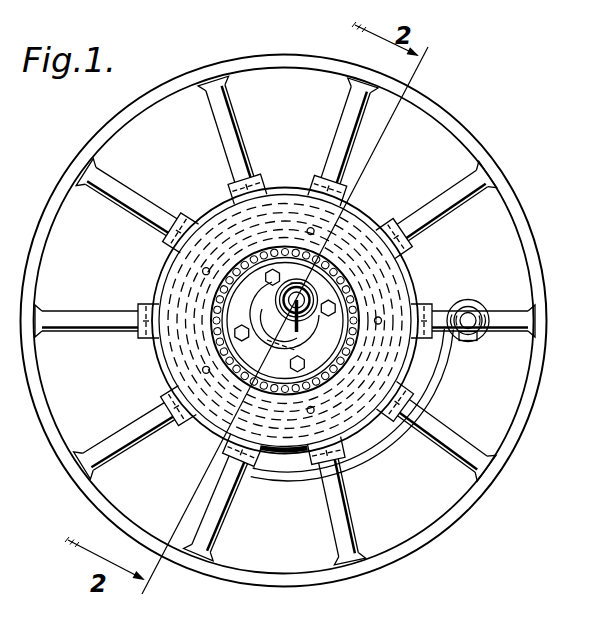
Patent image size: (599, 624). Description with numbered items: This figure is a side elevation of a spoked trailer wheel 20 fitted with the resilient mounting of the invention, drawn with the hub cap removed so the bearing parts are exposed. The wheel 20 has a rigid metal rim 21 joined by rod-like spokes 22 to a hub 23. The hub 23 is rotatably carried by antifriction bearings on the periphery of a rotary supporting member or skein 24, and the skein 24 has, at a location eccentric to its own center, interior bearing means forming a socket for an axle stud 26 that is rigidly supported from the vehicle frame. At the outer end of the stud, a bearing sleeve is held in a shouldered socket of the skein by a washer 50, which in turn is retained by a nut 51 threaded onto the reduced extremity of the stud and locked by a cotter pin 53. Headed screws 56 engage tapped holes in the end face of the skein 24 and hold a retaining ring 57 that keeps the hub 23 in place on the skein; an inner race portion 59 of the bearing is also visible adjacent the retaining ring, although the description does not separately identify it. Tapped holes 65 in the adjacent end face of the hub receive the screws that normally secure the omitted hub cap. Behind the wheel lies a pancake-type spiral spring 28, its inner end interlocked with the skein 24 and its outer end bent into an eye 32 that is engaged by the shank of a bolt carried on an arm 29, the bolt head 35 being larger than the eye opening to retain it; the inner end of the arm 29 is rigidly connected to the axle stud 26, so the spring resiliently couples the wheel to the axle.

The wheel 20 is at (468, 145).
The rigid metal rim 21 is at (516, 218).
The rod-like spokes 22 is at (457, 448).
The hub 23 is at (360, 417).
The skein 24 is at (261, 318).
The axle stud 26 is at (317, 296).
The spiral spring 28 is at (295, 477).
The arm 29 is at (467, 298).
The eye 32 is at (472, 341).
The head 35 is at (478, 312).
The washer 50 is at (304, 282).
The nut 51 is at (311, 321).
The cotter pin 53 is at (296, 283).
The headed screws 56 is at (243, 343).
The retaining ring 57 is at (229, 313).
The inner race 59 is at (232, 345).
The tapped holes 65 is at (207, 268).